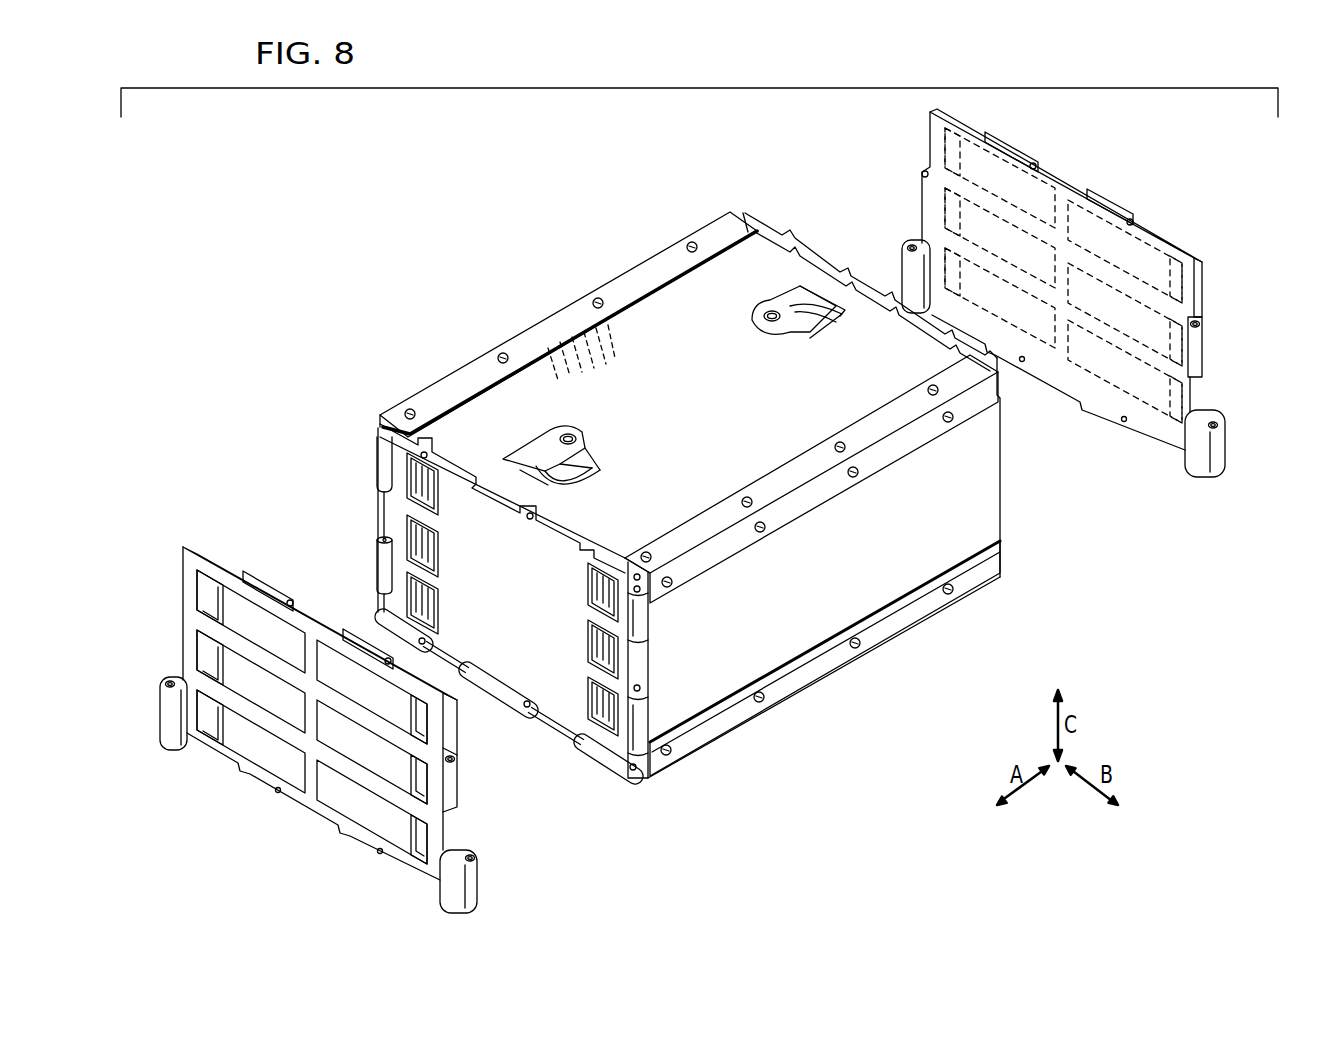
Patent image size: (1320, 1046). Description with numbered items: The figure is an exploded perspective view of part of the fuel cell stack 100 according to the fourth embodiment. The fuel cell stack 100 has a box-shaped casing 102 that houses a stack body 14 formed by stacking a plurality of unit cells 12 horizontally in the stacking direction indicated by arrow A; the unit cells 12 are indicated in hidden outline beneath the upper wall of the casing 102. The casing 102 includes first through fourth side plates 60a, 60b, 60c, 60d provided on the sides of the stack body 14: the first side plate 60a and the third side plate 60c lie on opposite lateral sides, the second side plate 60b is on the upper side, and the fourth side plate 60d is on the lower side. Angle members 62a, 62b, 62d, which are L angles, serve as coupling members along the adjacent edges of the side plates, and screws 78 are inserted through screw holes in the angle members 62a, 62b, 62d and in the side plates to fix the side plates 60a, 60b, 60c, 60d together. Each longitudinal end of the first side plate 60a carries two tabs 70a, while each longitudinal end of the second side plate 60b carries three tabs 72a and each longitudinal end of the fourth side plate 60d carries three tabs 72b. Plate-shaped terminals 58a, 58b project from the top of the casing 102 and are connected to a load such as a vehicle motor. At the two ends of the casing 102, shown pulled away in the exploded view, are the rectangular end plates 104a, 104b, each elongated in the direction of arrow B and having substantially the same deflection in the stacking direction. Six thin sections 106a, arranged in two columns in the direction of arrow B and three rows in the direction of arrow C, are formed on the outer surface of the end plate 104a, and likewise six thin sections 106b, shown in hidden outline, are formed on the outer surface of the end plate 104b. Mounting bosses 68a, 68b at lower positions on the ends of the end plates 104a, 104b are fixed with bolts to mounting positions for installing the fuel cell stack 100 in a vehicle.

The fuel cell stack 100 is at (366, 287).
The casing 102 is at (472, 357).
The unit cell 12 is at (562, 362).
The stack body 14 is at (533, 268).
The terminal 58a is at (548, 441).
The terminal 58b is at (783, 308).
The first side plate 60a is at (965, 470).
The second side plate 60b is at (722, 267).
The third side plate 60c is at (441, 430).
The fourth side plate 60d is at (552, 687).
The angle member 62a is at (774, 480).
The angle member 62b is at (643, 272).
The angle member 62d is at (907, 608).
The mounting boss 68a is at (470, 894).
The mounting boss 68b is at (1220, 450).
The tab 70a is at (647, 615).
The tab 72a is at (855, 293).
The tab 72b is at (498, 682).
The screw 78 is at (597, 298).
The end plate 104a is at (184, 545).
The end plate 104b is at (1198, 258).
The thin section 106a is at (236, 658).
The thin section 106b is at (947, 153).